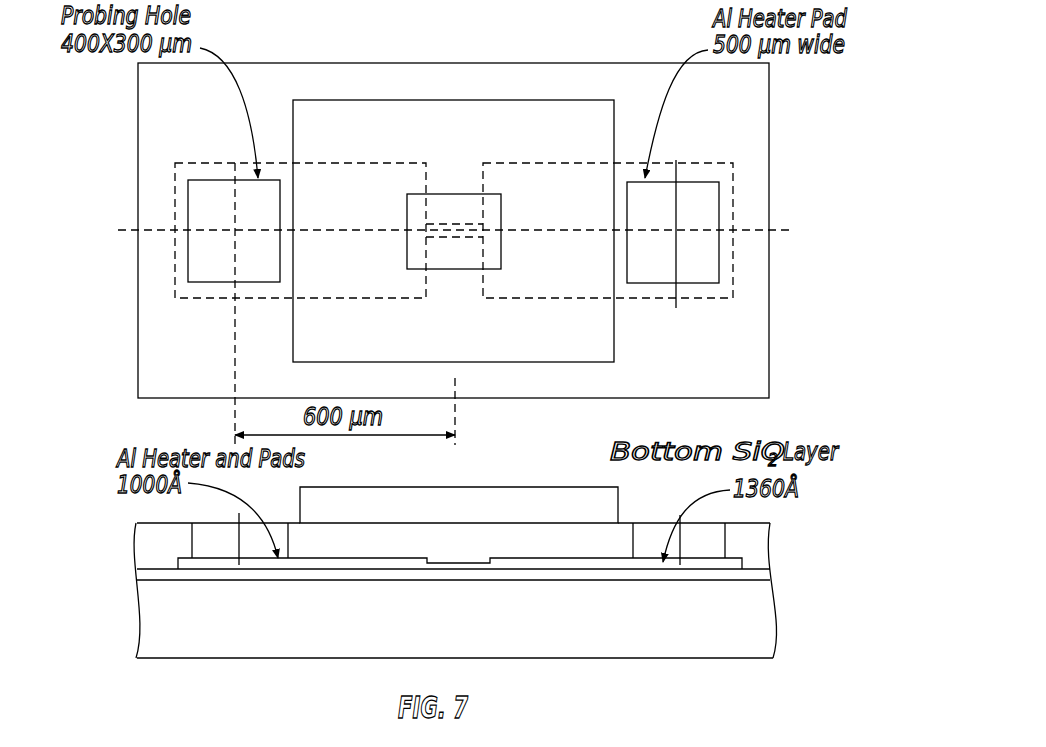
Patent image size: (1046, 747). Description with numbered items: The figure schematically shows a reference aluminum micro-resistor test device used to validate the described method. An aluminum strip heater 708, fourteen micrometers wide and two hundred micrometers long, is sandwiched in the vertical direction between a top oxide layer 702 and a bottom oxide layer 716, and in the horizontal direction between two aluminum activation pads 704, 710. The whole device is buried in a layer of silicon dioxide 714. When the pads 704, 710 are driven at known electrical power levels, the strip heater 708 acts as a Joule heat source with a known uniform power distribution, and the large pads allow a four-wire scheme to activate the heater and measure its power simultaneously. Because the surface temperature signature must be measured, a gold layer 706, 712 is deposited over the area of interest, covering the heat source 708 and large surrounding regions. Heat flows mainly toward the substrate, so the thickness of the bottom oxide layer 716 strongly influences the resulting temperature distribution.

The top oxide layer 702 is at (292, 521).
The Al activation pad 704 is at (204, 164).
The gold layer 706 is at (329, 116).
The aluminum strip heater 708 is at (487, 196).
The Al activation pad 710 is at (683, 188).
The gold layer 712 is at (607, 507).
The layer of silicon dioxide 714 is at (765, 623).
The bottom oxide layer 716 is at (137, 573).